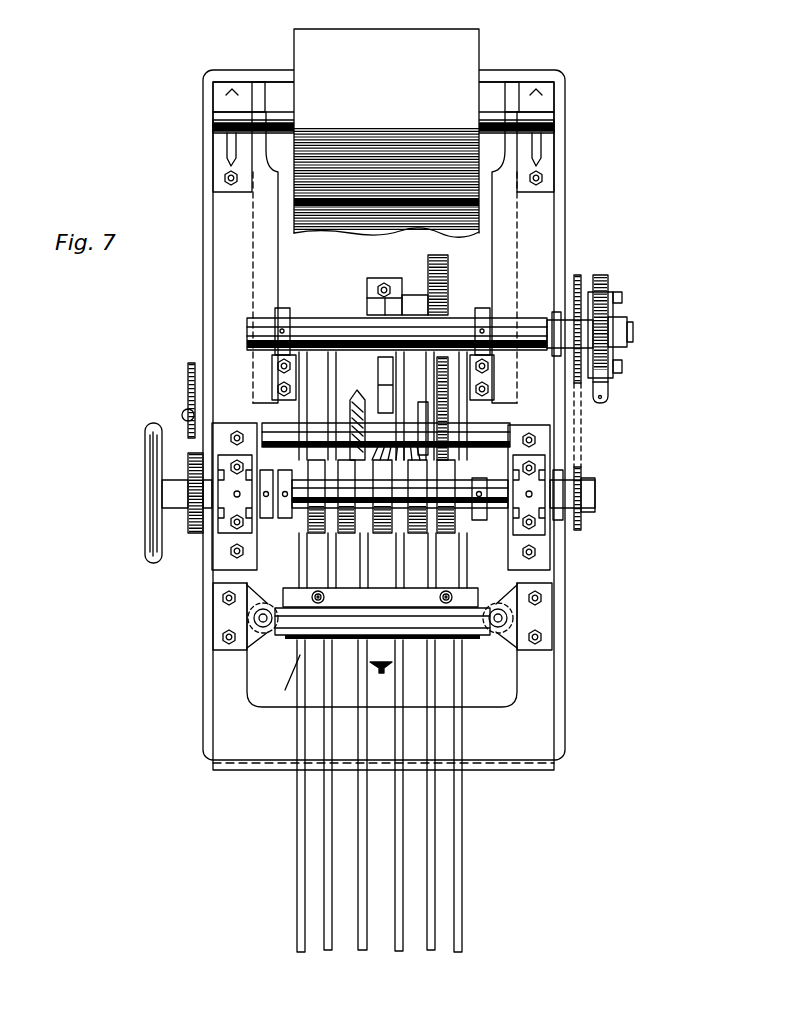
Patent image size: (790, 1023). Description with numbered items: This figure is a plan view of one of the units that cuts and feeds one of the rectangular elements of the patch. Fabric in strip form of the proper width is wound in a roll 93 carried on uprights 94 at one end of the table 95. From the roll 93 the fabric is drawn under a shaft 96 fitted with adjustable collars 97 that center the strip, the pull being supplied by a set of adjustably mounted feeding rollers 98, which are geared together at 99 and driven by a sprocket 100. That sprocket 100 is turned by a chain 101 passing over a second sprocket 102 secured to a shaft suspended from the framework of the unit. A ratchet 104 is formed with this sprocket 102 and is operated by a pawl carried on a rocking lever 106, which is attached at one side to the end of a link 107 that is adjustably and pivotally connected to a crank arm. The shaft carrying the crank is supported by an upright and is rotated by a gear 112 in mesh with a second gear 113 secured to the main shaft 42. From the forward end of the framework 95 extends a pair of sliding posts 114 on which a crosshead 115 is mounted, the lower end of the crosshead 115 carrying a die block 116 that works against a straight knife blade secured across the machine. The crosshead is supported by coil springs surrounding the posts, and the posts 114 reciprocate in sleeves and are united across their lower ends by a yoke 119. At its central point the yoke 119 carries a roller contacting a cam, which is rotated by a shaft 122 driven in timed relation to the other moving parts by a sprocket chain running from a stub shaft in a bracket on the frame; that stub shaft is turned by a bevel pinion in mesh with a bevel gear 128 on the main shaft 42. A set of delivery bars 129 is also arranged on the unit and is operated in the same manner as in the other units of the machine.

The main shaft 42 is at (186, 412).
The roll 93 is at (417, 36).
The uprights 94 is at (232, 140).
The table 95 is at (566, 185).
The shaft 96 is at (335, 316).
The adjustable collars 97 is at (283, 312).
The feeding rollers 98 is at (312, 536).
The gearing 99 is at (196, 535).
The sprocket 100 is at (583, 527).
The chain 101 is at (582, 430).
The sprocket 102 is at (578, 275).
The ratchet 104 is at (608, 310).
The rocking lever 106 is at (617, 354).
The link 107 is at (604, 398).
The gear 112 is at (429, 262).
The second gear 113 is at (448, 458).
The sliding posts 114 is at (254, 618).
The crosshead 115 is at (485, 640).
The die block 116 is at (287, 642).
The yoke 119 is at (318, 653).
The shaft 122 is at (436, 440).
The bevel gear 128 is at (318, 432).
The delivery bars 129 is at (462, 740).